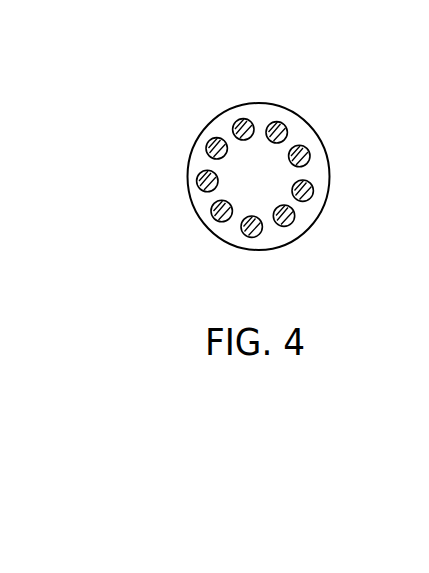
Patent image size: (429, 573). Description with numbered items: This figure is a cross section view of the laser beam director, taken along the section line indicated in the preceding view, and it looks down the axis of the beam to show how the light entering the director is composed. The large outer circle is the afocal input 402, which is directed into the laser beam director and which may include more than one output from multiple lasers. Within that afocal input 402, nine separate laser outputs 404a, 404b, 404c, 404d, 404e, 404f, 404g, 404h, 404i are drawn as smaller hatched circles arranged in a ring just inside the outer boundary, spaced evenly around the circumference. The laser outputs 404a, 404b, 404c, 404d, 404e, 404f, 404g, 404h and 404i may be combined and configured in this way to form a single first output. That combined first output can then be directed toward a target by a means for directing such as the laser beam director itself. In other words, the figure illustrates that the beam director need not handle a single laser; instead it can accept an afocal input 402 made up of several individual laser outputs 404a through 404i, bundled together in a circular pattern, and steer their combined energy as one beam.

The afocal input 402 is at (274, 102).
The laser output 404a is at (281, 124).
The laser output 404b is at (310, 156).
The laser output 404c is at (312, 192).
The laser output 404d is at (286, 222).
The laser output 404e is at (250, 236).
The laser output 404f is at (216, 216).
The laser output 404g is at (198, 178).
The laser output 404h is at (211, 142).
The laser output 404i is at (246, 120).